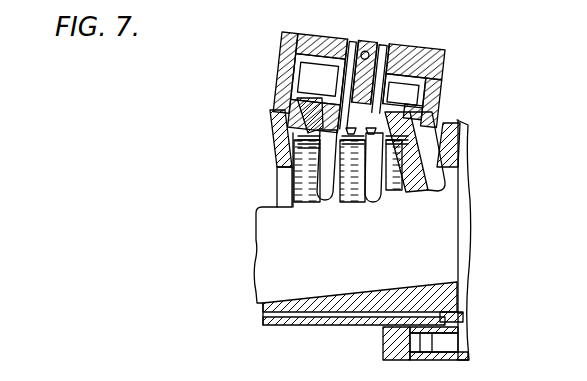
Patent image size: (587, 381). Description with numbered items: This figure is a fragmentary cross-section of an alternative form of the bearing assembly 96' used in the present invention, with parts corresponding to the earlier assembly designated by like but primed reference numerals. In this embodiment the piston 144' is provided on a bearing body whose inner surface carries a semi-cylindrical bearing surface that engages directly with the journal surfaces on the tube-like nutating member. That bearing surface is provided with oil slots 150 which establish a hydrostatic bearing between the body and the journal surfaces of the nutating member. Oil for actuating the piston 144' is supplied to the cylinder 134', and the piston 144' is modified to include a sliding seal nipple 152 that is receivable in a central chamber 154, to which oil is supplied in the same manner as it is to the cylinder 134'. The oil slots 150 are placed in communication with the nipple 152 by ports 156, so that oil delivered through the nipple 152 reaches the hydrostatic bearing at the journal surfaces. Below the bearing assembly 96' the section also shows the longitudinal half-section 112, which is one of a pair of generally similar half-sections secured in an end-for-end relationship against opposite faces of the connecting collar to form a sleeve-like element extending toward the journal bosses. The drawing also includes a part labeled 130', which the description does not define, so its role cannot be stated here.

The cap 130' is at (397, 87).
The cylinder 134' is at (441, 62).
The piston 144' is at (463, 110).
The central chamber 154 is at (352, 64).
The sliding seal nipple 152 is at (378, 56).
The bearing assembly 96' is at (326, 152).
The oil slots 150 is at (370, 200).
The ports 156 is at (370, 136).
The longitudinal half-section 112 is at (327, 303).